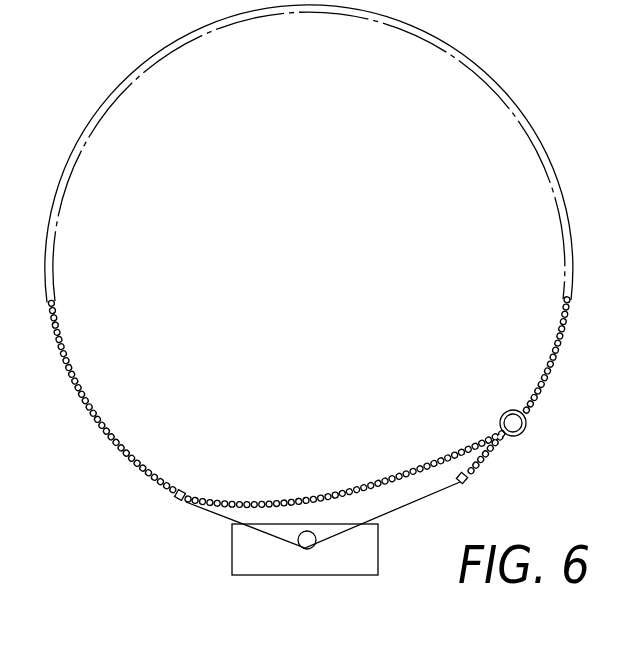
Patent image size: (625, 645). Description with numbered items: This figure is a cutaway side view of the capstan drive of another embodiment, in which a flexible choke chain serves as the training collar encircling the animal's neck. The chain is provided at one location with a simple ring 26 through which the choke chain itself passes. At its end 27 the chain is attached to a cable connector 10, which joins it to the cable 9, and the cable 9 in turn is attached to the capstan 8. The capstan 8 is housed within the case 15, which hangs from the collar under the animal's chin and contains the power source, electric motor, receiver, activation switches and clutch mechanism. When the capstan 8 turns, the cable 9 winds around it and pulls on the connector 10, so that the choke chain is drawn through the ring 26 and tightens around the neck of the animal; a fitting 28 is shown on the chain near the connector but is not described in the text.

The capstan 8 is at (306, 552).
The cable 9 is at (218, 517).
The cable connector 10 is at (177, 500).
The case 15 is at (287, 576).
The ring 26 is at (504, 412).
The end 27 is at (470, 484).
The clasp 28 is at (186, 494).